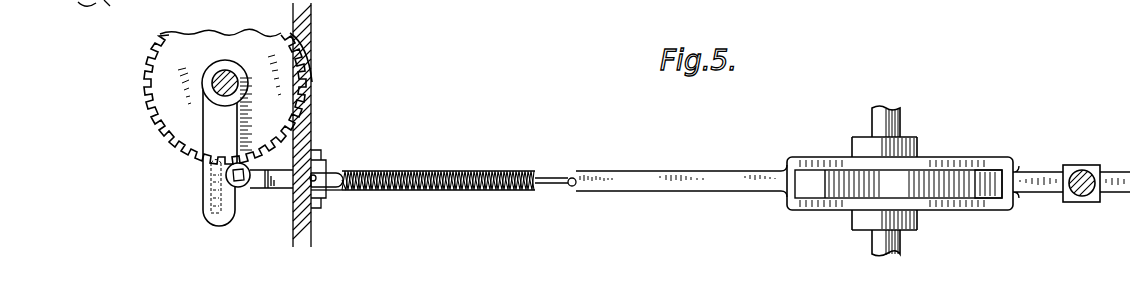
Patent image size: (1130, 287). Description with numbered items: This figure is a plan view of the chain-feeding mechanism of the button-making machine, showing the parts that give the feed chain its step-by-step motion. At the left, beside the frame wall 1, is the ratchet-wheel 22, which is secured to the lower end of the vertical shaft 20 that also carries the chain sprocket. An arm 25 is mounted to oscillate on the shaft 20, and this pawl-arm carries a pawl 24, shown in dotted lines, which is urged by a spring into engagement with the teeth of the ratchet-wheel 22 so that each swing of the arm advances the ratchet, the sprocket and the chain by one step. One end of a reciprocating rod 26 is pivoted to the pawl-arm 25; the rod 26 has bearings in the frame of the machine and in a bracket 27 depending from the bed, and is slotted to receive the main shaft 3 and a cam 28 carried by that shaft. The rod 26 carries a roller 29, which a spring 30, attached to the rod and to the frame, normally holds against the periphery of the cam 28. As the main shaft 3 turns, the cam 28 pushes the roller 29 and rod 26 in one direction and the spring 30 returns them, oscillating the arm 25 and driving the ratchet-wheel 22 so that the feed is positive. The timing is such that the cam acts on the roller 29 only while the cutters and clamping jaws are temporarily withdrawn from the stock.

The wall 1 is at (315, 25).
The main shaft 3 is at (898, 125).
The shaft 20 is at (222, 76).
The ratchet-wheel 22 is at (143, 65).
The pawl 24 is at (213, 173).
The arm 25 is at (240, 123).
The reciprocating rod 26 is at (637, 182).
The bracket 27 is at (1071, 173).
The cam 28 is at (900, 183).
The roller 29 is at (990, 208).
The spring 30 is at (430, 170).